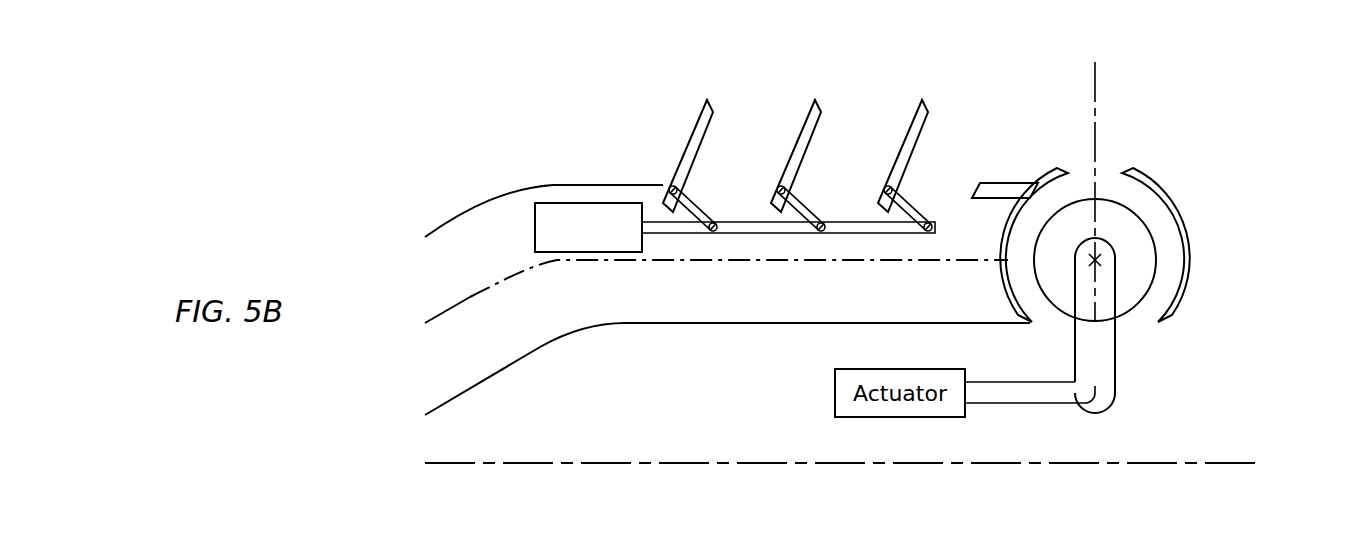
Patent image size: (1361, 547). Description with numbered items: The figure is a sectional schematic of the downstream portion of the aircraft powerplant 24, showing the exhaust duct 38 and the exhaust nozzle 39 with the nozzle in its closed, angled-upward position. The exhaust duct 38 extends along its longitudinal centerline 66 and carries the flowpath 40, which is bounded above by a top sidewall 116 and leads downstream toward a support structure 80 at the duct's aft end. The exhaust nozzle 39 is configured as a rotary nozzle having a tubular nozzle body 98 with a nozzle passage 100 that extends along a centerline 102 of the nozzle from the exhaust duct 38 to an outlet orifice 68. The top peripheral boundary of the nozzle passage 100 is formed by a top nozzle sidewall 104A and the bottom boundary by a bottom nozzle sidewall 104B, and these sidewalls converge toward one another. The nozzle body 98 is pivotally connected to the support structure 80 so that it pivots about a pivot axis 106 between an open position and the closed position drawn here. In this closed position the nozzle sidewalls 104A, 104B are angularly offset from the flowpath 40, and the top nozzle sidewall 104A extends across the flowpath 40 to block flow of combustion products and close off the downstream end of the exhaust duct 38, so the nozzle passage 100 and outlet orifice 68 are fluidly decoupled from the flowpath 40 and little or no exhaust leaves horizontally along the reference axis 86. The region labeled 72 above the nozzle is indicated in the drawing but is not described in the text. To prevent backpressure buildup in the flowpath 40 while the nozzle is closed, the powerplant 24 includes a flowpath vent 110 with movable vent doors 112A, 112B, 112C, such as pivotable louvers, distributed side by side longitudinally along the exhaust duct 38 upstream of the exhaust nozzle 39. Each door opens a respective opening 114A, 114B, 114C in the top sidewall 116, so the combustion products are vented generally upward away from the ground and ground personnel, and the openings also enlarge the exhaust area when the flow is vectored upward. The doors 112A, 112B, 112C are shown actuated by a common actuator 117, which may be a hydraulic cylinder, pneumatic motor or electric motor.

The aircraft powerplant 24 is at (1259, 148).
The exhaust duct 38 is at (469, 207).
The exhaust nozzle 39 is at (1210, 232).
The flowpath 40 is at (593, 303).
The longitudinal centerline 66 is at (447, 306).
The outlet orifice 68 is at (1110, 178).
The axis 72 is at (1069, 44).
The support structure 80 is at (860, 325).
The reference axis 86 is at (446, 465).
The nozzle body 98 is at (1168, 212).
The nozzle passage 100 is at (1131, 292).
The centerline 102 is at (1110, 70).
The top nozzle sidewall 104A is at (1043, 180).
The bottom nozzle sidewall 104B is at (1150, 190).
The pivot axis 106 is at (1088, 261).
The flowpath vent 110 is at (937, 86).
The vent door 112A is at (704, 101).
The vent door 112B is at (705, 101).
The vent door 112C is at (869, 136).
The opening 114A is at (735, 188).
The opening 114B is at (832, 173).
The opening 114C is at (940, 173).
The top sidewall 116 is at (585, 184).
The actuator 117 is at (552, 202).